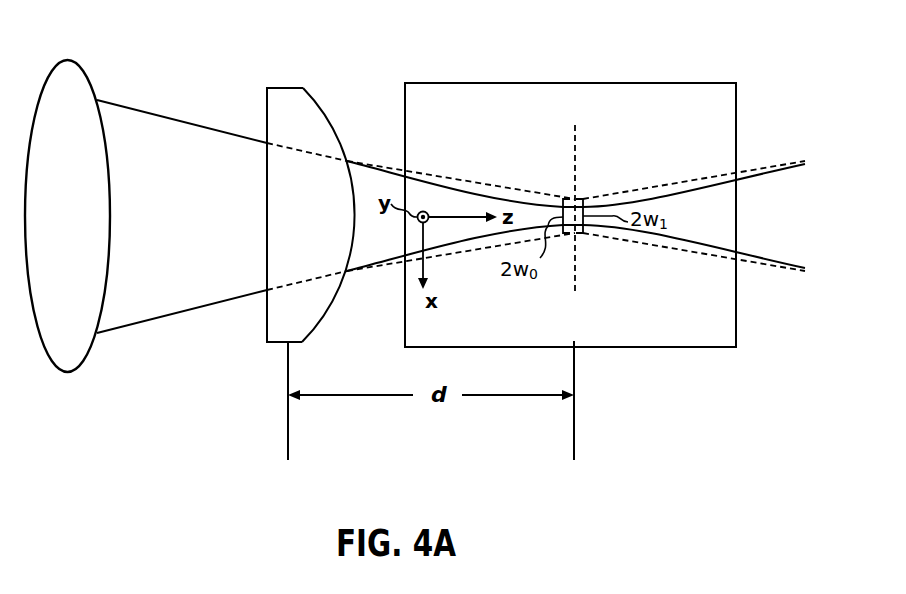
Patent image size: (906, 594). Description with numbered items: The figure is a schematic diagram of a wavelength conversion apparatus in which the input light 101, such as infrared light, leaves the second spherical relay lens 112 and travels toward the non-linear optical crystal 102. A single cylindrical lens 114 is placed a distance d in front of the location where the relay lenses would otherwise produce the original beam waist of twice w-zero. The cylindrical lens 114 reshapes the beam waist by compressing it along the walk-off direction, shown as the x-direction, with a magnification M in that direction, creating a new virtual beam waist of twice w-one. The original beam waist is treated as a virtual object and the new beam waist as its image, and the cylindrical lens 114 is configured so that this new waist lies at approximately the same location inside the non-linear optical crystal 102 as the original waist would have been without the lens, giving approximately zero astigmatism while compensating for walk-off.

The second spherical relay lens 112 is at (86, 82).
The input light 101 is at (183, 118).
The cylindrical lens 114 is at (281, 88).
The non-linear optical crystal 102 is at (575, 87).